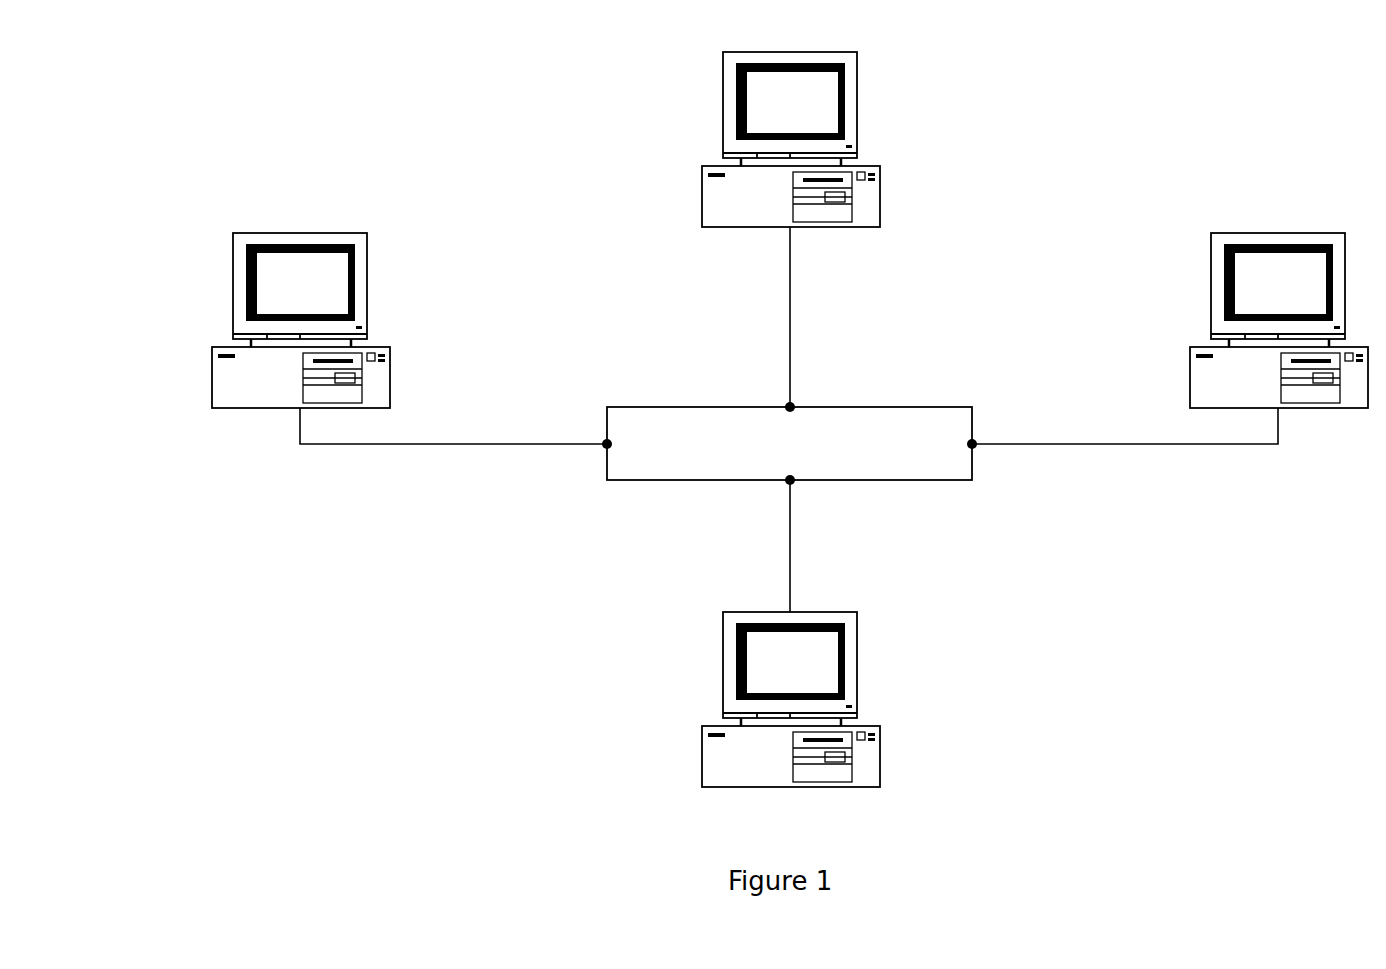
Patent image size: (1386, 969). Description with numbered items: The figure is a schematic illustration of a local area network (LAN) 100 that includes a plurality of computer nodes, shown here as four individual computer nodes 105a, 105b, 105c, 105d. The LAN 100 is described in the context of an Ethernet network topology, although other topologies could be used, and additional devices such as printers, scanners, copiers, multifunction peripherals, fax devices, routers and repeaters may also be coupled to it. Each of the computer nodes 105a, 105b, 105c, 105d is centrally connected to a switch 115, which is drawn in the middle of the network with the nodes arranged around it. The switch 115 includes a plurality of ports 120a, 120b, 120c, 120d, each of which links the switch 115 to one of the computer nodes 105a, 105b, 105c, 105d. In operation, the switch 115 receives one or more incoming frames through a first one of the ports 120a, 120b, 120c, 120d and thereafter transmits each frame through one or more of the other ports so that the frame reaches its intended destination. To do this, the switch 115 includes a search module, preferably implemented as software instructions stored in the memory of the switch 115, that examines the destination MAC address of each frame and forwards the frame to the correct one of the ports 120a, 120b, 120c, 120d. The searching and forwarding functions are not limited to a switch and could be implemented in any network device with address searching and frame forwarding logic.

The local area network 100 is at (469, 80).
The computer node 105a is at (880, 186).
The computer node 105b is at (1190, 367).
The computer node 105c is at (702, 745).
The computer node 105d is at (390, 367).
The switch 115 is at (789, 443).
The port 120a is at (790, 407).
The port 120b is at (972, 444).
The port 120c is at (790, 480).
The port 120d is at (607, 444).